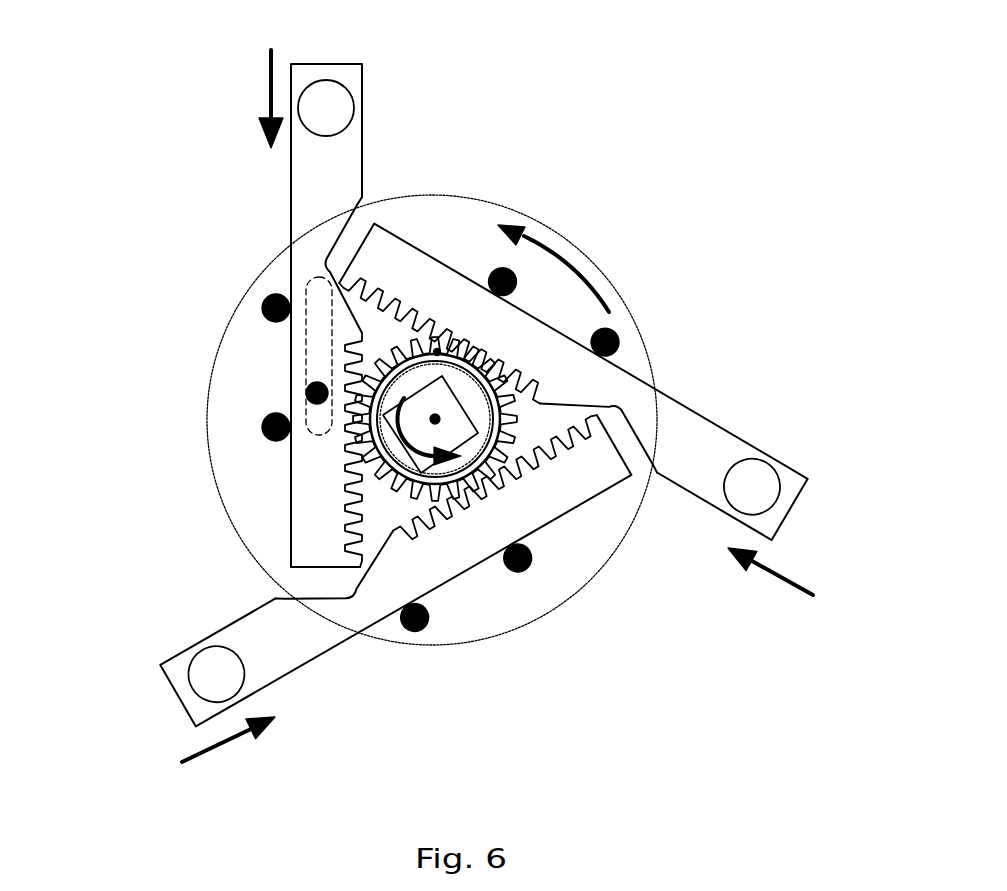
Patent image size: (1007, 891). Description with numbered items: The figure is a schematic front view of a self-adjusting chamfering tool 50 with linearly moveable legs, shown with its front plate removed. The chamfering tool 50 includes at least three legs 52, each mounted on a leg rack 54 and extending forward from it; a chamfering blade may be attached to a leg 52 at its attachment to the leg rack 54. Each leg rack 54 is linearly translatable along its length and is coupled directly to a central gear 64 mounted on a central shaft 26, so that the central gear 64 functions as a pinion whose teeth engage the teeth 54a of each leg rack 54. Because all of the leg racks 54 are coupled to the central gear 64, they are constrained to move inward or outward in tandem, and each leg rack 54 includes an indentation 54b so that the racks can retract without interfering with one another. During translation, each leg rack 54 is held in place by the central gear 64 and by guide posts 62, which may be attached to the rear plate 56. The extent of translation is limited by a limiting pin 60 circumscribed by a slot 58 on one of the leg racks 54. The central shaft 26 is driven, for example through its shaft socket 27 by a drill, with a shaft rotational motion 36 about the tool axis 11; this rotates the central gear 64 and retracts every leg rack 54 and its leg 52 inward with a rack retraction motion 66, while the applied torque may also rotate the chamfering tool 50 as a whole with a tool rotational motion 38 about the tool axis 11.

The chamfering tool 50 is at (630, 117).
The leg 52 is at (348, 98).
The leg rack 54 is at (365, 158).
The teeth 54a is at (395, 307).
The indentation 54b is at (337, 245).
The rear plate 56 is at (256, 282).
The slot 58 is at (305, 350).
The limiting pin 60 is at (317, 392).
The guide post 62 is at (617, 334).
The rack retraction motion 66 is at (268, 83).
The tool rotational motion 38 is at (575, 263).
The central shaft 26 is at (476, 397).
The central gear 64 is at (376, 468).
The shaft socket 27 is at (468, 441).
The tool axis 11 is at (437, 418).
The shaft rotational motion 36 is at (404, 425).